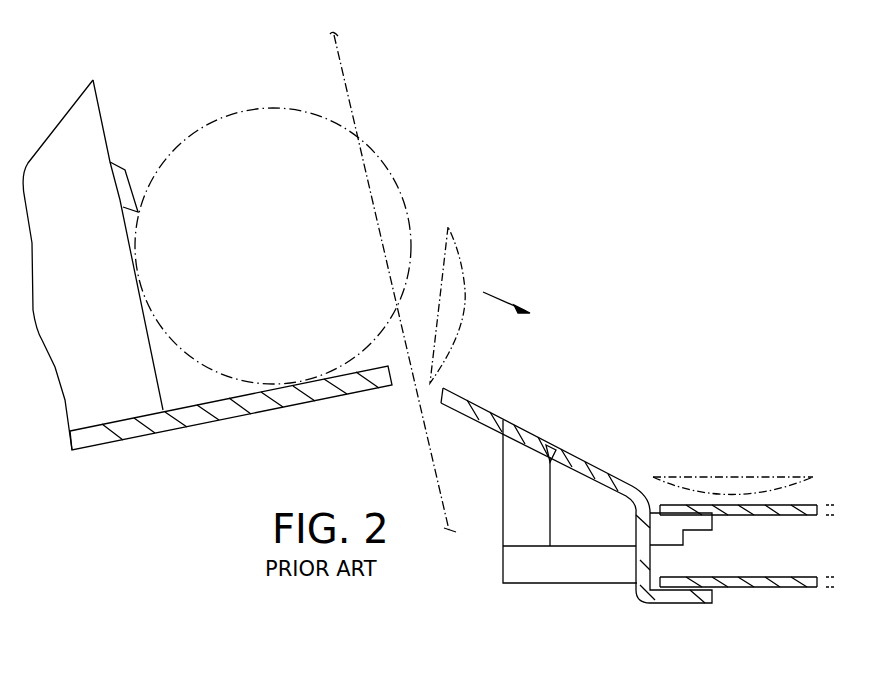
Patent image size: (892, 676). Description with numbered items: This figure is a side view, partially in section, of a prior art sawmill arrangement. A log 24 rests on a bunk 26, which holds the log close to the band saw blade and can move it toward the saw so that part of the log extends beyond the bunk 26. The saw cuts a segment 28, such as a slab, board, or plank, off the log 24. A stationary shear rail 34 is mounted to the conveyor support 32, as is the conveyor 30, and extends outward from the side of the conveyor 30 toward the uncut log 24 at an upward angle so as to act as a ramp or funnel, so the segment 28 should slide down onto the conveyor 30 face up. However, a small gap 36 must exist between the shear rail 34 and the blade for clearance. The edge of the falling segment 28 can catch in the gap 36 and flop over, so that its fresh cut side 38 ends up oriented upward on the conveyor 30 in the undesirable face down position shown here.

The log 24 is at (260, 126).
The bunk 26 is at (77, 372).
The segment 28 is at (465, 308).
The conveyor 30 is at (802, 510).
The conveyor support 32 is at (586, 572).
The shear rail 34 is at (502, 418).
The gap 36 is at (443, 389).
The fresh cut side 38 is at (443, 257).